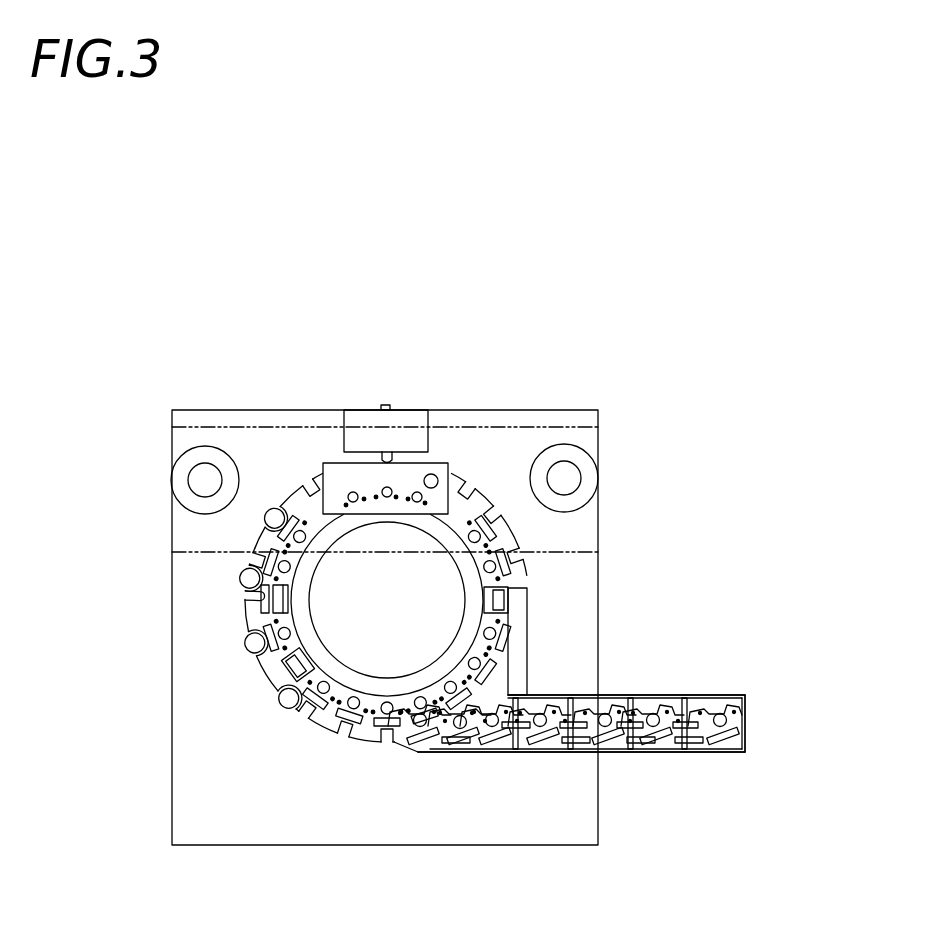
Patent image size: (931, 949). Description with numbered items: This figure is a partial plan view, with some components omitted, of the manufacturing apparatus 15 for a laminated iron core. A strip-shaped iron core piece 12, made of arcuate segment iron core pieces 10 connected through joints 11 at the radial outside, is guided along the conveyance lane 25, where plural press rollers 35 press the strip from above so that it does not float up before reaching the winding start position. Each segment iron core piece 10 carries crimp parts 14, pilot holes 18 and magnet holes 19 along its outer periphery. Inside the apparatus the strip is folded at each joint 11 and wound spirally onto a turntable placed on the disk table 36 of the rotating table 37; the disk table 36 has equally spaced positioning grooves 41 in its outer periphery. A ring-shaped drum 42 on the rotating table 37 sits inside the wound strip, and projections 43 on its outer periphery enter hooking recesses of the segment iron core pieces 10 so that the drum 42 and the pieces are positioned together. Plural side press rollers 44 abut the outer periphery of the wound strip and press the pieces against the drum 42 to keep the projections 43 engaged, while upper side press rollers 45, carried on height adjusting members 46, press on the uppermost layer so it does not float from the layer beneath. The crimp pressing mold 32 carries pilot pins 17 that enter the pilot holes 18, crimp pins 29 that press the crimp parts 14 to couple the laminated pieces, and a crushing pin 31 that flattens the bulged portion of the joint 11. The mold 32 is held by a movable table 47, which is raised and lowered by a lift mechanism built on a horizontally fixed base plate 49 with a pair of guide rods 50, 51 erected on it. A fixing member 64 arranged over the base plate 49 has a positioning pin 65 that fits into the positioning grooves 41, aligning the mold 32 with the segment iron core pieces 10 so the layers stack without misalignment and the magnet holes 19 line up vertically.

The segment iron core piece 10 is at (667, 746).
The joint 11 is at (403, 722).
The strip-shaped iron core piece 12 is at (326, 720).
The crimp part 14 is at (625, 705).
The manufacturing apparatus 15 is at (136, 230).
The pilot pin 17 is at (352, 493).
The pilot hole 18 is at (727, 712).
The magnet hole 19 is at (733, 751).
The conveyance lane 25 is at (722, 754).
The crimp pin 29 is at (376, 496).
The crushing pin 31 is at (461, 463).
The crimp pressing mold 32 is at (317, 457).
The press roller 35 is at (578, 712).
The disk table 36 is at (236, 620).
The rotating table 37 is at (492, 503).
The positioning groove 41 is at (243, 598).
The drum 42 is at (258, 557).
The projection 43 is at (510, 518).
The side press roller 44 is at (277, 708).
The upper side press roller 45 is at (506, 596).
The height adjusting member 46 is at (517, 602).
The movable table 47 is at (582, 437).
The base plate 49 is at (202, 659).
The guide rod 50 is at (200, 476).
The guide rod 51 is at (566, 477).
The fixing member 64 is at (360, 406).
The positioning pin 65 is at (389, 487).